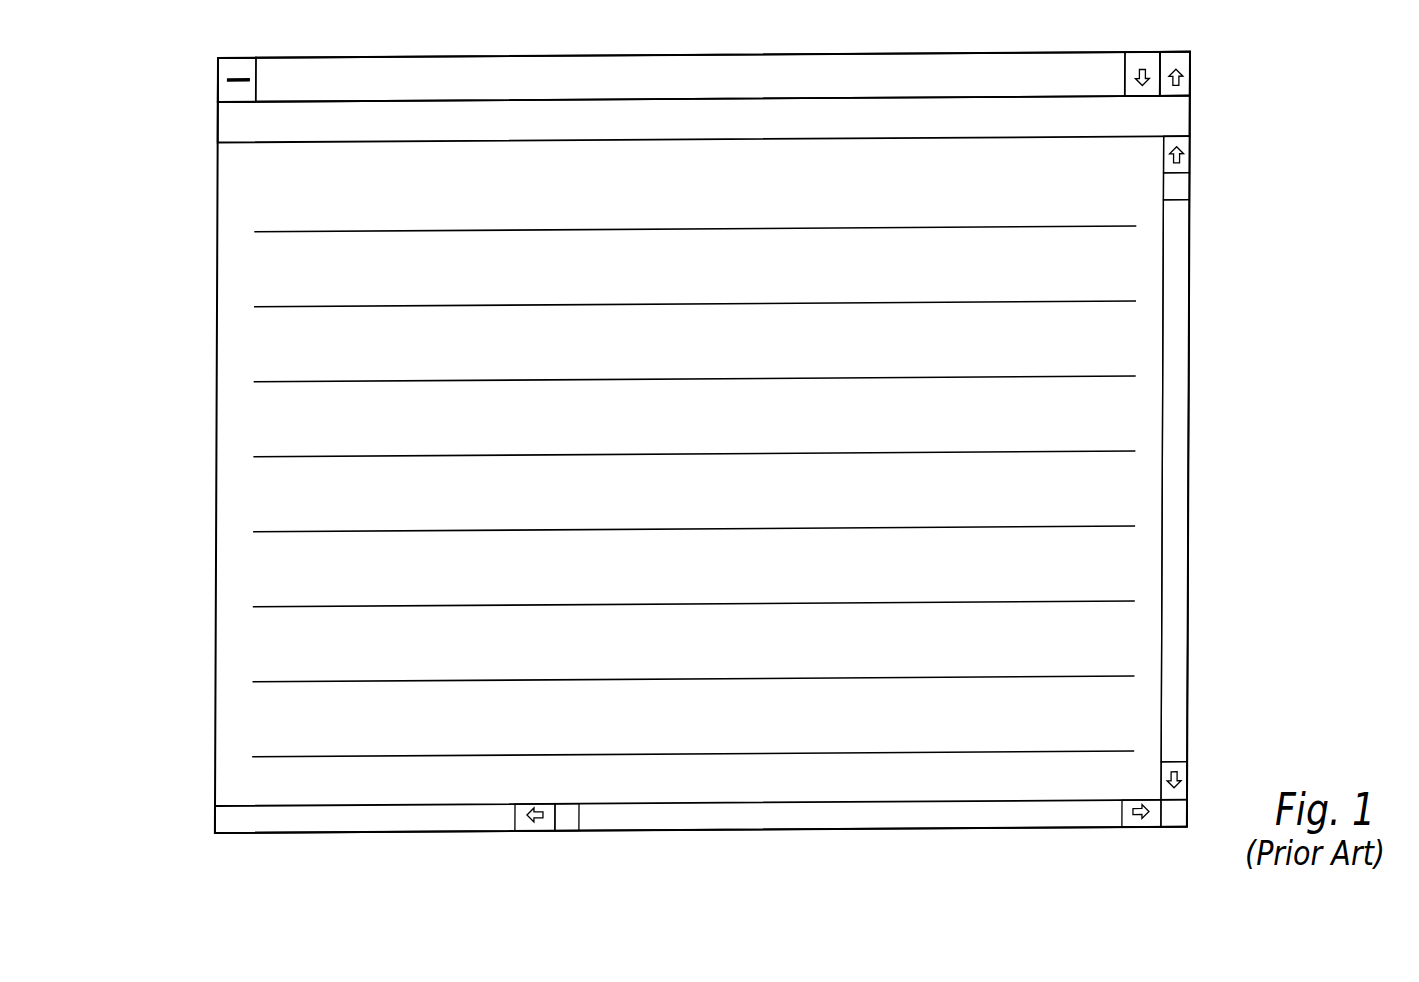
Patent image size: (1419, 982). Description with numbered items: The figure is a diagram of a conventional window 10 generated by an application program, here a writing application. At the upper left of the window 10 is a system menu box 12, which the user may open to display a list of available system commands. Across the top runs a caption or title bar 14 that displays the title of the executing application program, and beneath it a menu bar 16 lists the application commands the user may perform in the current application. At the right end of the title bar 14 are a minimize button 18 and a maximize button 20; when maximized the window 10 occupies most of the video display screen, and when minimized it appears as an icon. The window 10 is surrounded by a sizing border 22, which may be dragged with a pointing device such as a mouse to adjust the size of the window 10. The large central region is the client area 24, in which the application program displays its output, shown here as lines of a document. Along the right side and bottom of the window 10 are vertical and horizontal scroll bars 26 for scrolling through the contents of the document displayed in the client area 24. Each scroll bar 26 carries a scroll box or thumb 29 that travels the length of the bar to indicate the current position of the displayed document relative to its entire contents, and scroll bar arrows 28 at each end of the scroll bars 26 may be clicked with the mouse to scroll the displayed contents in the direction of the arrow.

The window 10 is at (200, 645).
The system menu box 12 is at (240, 89).
The title bar 14 is at (445, 83).
The menu bar 16 is at (868, 128).
The minimize button 18 is at (1137, 87).
The maximize button 20 is at (1187, 62).
The sizing border 22 is at (1190, 333).
The client area 24 is at (1110, 567).
The scroll bars 26 is at (1168, 697).
The scroll bar arrows 28 is at (1185, 159).
The thumb 29 is at (1182, 190).